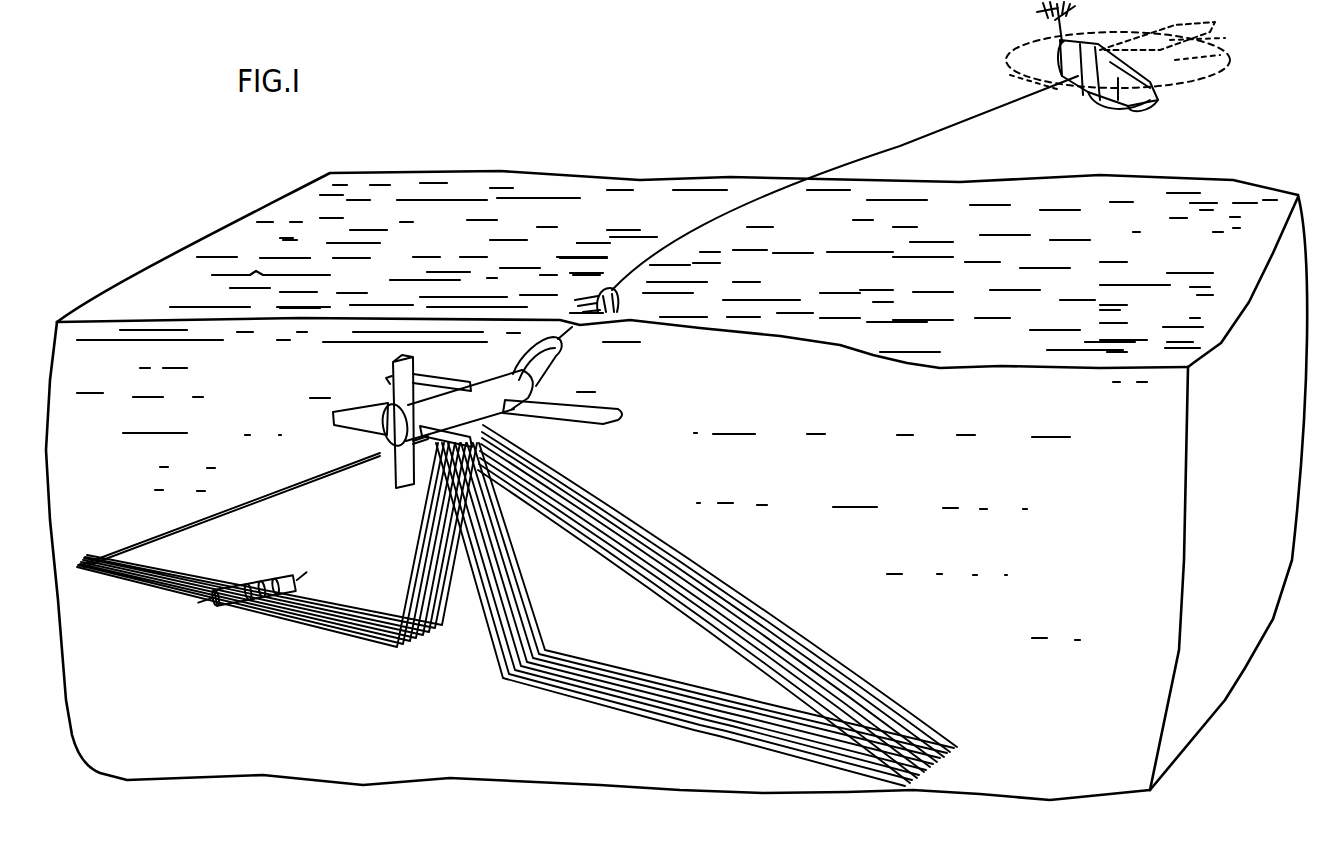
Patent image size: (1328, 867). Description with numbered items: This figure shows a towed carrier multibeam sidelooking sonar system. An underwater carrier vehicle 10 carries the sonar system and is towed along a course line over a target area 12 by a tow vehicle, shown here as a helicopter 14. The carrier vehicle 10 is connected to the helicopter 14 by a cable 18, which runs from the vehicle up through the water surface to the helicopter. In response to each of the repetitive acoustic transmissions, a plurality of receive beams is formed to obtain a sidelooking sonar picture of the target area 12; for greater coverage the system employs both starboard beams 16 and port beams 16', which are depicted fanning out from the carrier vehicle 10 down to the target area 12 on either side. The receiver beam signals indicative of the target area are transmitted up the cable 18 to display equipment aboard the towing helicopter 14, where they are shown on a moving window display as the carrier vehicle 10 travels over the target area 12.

The underwater carrier vehicle 10 is at (487, 388).
The target area 12 is at (431, 737).
The helicopter 14 is at (1110, 105).
The starboard beams 16 is at (701, 608).
The port beams 16' is at (273, 541).
The cable 18 is at (898, 150).